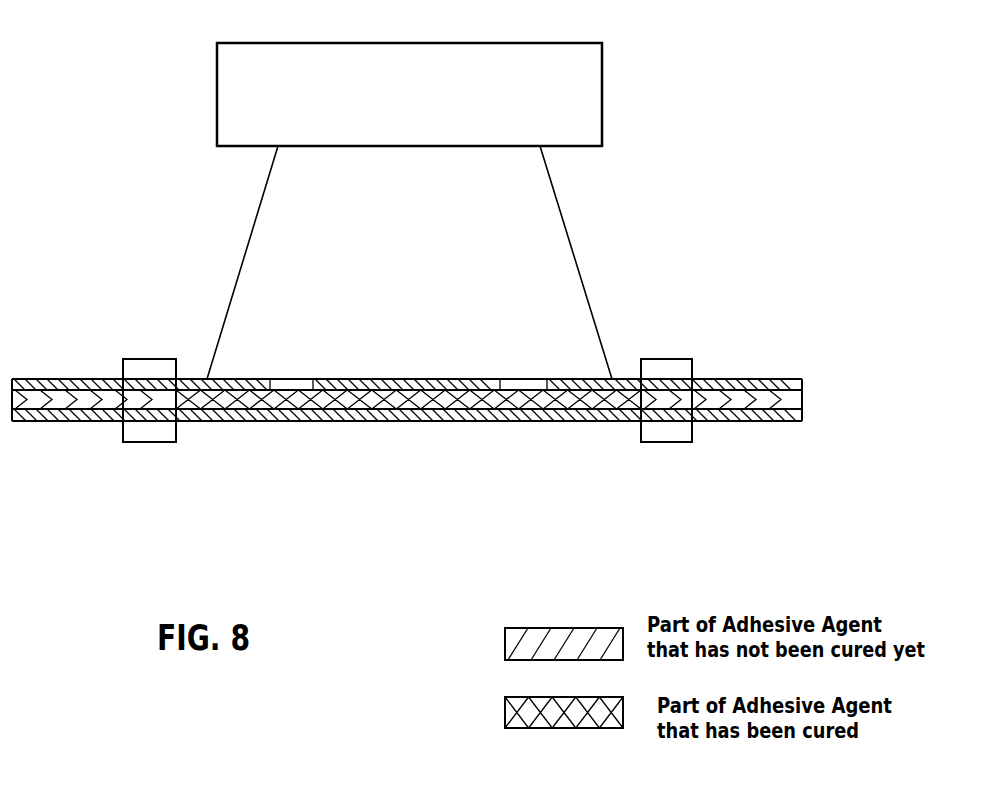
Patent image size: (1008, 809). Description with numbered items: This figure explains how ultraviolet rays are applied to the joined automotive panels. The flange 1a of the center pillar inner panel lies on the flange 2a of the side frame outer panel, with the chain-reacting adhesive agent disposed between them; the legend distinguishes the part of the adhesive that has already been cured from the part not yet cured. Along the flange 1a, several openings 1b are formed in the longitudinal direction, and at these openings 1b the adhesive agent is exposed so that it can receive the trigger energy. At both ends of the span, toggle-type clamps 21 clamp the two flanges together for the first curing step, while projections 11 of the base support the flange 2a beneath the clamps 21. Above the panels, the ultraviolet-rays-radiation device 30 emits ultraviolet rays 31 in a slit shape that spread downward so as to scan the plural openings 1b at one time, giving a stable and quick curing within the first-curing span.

The ultraviolet-rays-radiation device 30 is at (602, 93).
The ultraviolet rays 31 is at (575, 262).
The flange 1a is at (201, 379).
The opening 1b is at (280, 385).
The flange 2a is at (577, 421).
The toggle-type clamp 21 is at (145, 359).
The projection 11 is at (148, 442).